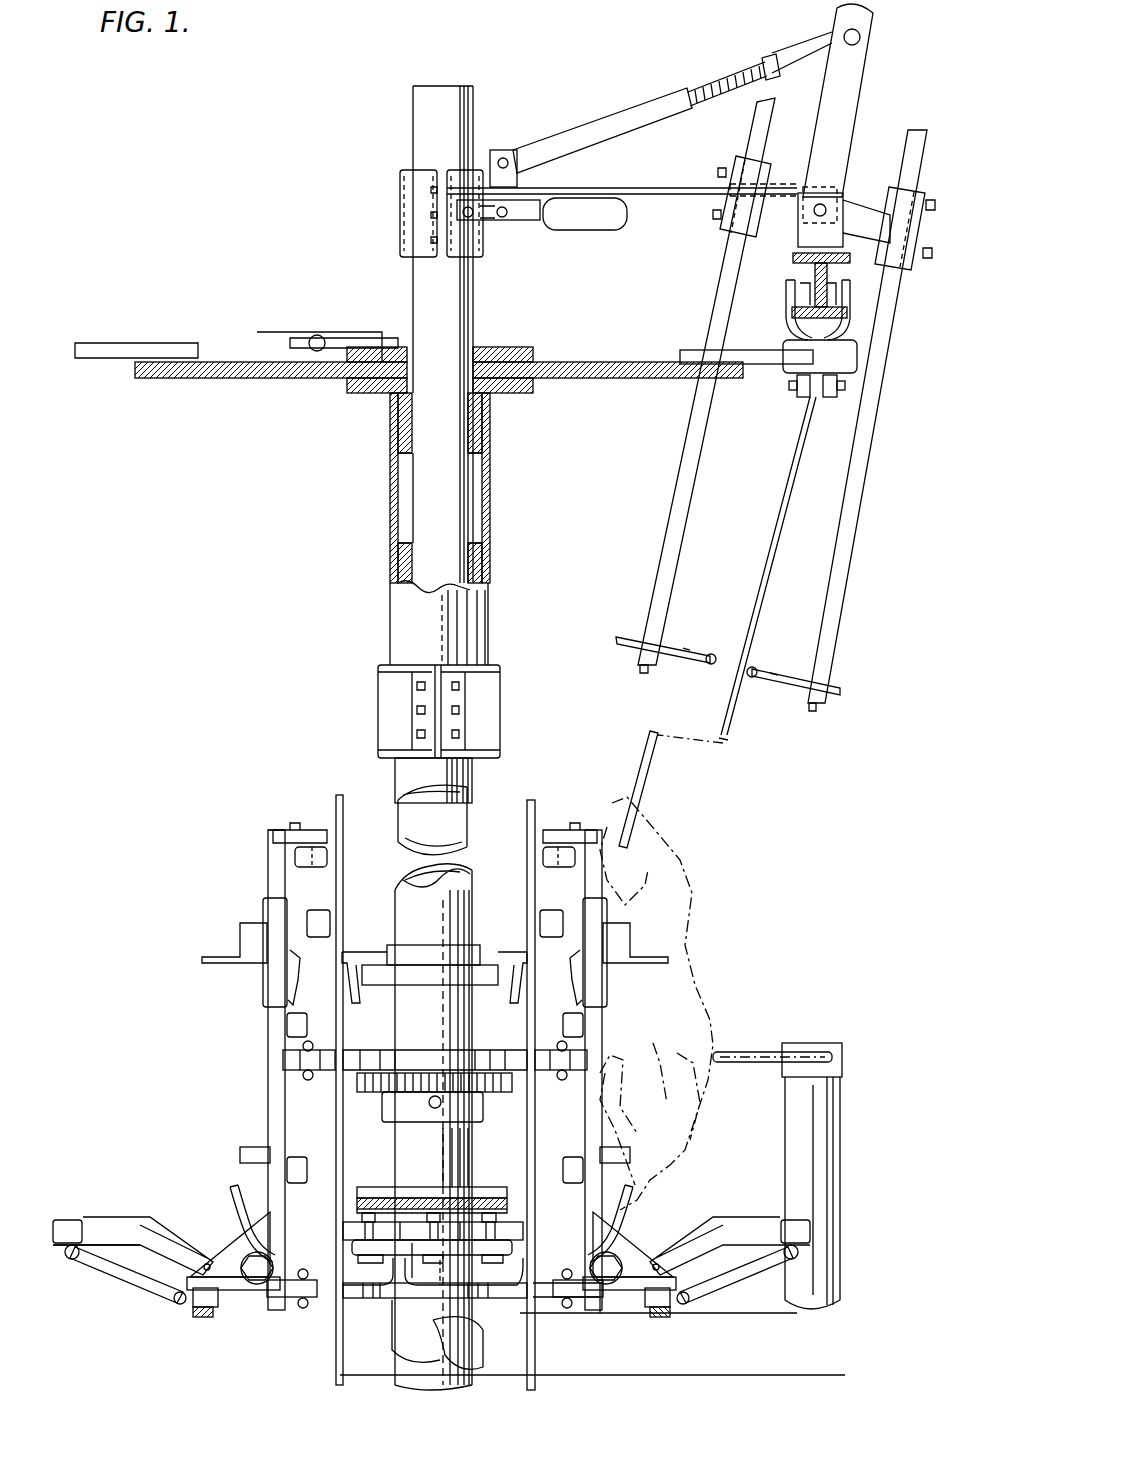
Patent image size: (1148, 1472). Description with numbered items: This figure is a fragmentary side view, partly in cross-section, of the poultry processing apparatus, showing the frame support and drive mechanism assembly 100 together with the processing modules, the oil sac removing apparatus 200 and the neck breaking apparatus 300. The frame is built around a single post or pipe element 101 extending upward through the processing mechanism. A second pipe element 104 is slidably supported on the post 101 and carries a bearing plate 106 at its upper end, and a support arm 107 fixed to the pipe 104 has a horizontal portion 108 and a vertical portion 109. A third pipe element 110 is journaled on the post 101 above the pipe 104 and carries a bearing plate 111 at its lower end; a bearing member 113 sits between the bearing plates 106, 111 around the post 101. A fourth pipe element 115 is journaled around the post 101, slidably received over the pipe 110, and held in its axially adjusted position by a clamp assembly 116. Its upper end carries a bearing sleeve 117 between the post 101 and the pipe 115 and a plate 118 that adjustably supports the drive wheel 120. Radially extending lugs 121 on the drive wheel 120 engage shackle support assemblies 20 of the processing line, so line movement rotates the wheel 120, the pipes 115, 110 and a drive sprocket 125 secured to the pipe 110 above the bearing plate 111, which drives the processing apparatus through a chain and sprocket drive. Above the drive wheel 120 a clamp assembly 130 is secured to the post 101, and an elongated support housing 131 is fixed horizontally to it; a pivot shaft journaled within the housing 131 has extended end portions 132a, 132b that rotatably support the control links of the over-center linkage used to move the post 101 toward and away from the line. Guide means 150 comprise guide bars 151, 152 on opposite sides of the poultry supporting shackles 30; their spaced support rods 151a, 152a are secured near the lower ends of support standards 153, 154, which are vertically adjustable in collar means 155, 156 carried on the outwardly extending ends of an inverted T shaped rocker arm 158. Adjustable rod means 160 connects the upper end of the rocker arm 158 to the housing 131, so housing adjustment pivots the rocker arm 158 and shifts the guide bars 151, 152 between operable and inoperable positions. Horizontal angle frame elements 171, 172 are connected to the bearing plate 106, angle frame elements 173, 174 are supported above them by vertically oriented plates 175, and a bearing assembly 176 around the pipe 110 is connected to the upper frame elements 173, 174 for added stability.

The shackle support assemblies 20 is at (845, 353).
The poultry supporting shackles 30 is at (737, 730).
The frame support and drive mechanism assembly 100 is at (662, 300).
The post or pipe element 101 is at (473, 115).
The second pipe element 104 is at (405, 1320).
The bearing plate 106 is at (412, 1258).
The support arm 107 is at (620, 1355).
The horizontal portion 108 is at (683, 1360).
The vertical portion 109 is at (828, 1170).
The third pipe element 110 is at (487, 580).
The bearing plate 111 is at (480, 1192).
The bearing member 113 is at (360, 1200).
The fourth pipe element 115 is at (490, 510).
The clamp assembly 116 is at (480, 722).
The bearing sleeve 117 is at (393, 448).
The plate 118 is at (515, 395).
The drive wheel 120 is at (650, 380).
The lugs 121 is at (762, 365).
The drive sprocket 125 is at (377, 1082).
The clamp assembly 130 is at (402, 232).
The elongated support housing 131 is at (508, 225).
The extended end portion of pivot shaft 132a is at (508, 212).
The extended end portion of pivot shaft 132b is at (493, 212).
The guide means 150 is at (855, 582).
The guide bar 151 is at (700, 672).
The support rods 151a is at (690, 637).
The guide bar 152 is at (735, 723).
The support rods 152a is at (775, 675).
The support standard 153 is at (675, 512).
The support standard 154 is at (847, 530).
The collar means 155 is at (720, 232).
The collar means 156 is at (920, 232).
The rocker arm 158 is at (850, 107).
The adjustable rod means 160 is at (632, 100).
The angle frame element 171 is at (350, 1228).
The angle frame element 172 is at (522, 1255).
The angle frame element 173 is at (358, 957).
The angle frame element 174 is at (507, 958).
The vertically oriented plates 175 is at (336, 800).
The bearing assembly 176 is at (455, 973).
The oil sac removing apparatus 200 is at (228, 930).
The neck breaking apparatus 300 is at (155, 1205).